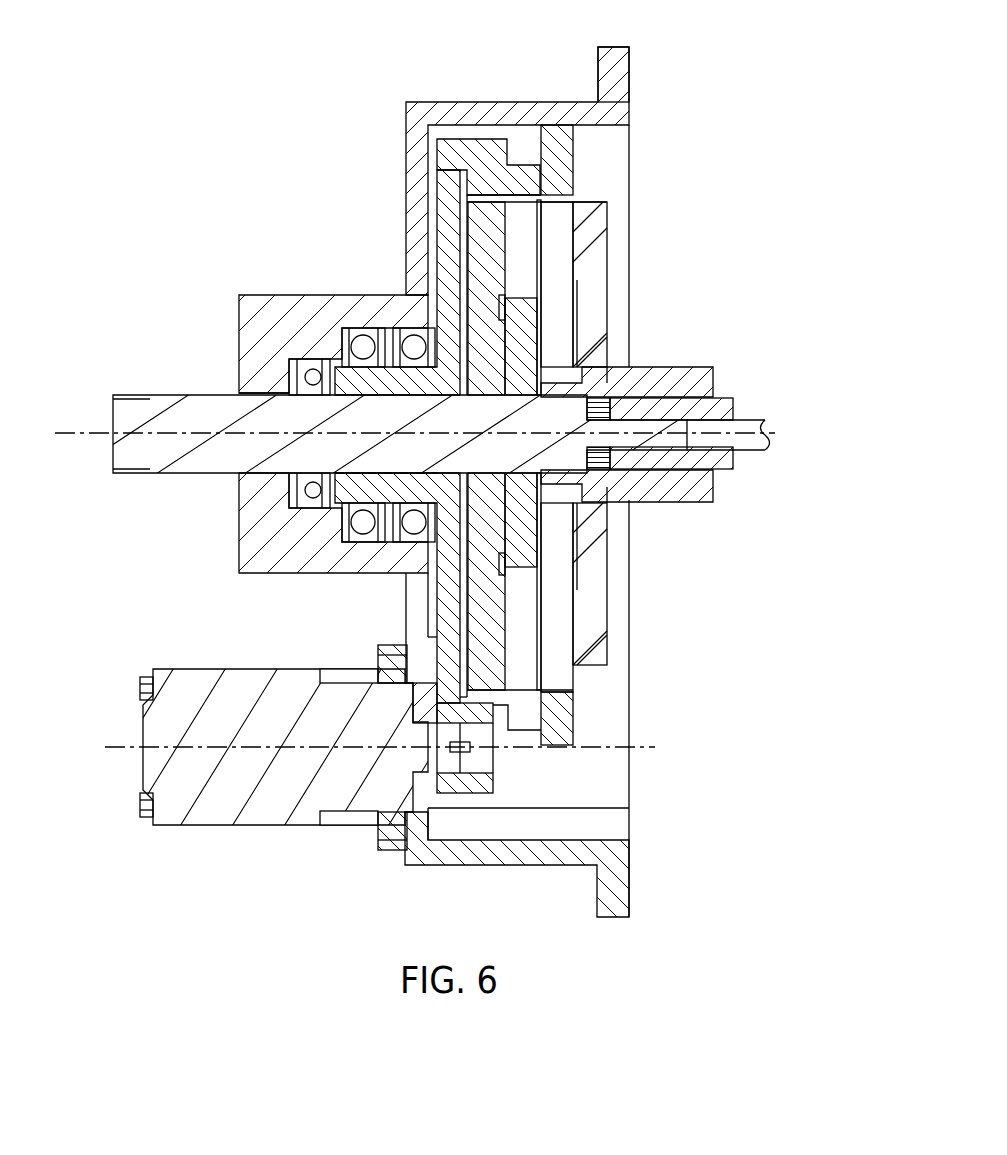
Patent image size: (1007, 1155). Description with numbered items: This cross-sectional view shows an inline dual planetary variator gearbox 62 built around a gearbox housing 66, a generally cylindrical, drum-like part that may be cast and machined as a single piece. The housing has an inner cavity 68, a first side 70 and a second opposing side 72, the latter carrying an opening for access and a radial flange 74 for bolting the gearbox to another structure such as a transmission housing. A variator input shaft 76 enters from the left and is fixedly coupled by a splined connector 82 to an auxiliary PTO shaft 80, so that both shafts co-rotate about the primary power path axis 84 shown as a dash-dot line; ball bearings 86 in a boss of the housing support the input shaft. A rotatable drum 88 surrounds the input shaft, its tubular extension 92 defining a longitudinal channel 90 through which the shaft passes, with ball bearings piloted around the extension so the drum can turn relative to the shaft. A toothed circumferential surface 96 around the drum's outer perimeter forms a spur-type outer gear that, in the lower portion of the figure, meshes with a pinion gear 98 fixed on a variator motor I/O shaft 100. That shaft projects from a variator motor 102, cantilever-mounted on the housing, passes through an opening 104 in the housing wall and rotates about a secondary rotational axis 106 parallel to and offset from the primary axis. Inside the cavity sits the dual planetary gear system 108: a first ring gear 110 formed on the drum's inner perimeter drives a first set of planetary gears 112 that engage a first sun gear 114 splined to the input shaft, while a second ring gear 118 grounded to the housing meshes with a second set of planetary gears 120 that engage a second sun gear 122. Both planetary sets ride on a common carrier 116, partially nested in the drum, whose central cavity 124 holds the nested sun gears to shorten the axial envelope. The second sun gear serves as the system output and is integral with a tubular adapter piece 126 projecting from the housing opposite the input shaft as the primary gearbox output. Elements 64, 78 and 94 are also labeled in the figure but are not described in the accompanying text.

The inline dual planetary variator gearbox 62 is at (236, 70).
The lower housing portion 64 is at (250, 566).
The gearbox housing 66 is at (238, 520).
The inner cavity 68 is at (614, 837).
The first side 70 is at (240, 312).
The second opposing side 72 is at (630, 100).
The radial flange 74 is at (600, 75).
The variator input shaft 76 is at (152, 394).
The shaft journal 78 is at (266, 385).
The auxiliary PTO shaft 80 is at (752, 426).
The splined connector 82 is at (722, 406).
The primary power path axis 84 is at (88, 435).
The ball bearings 86 is at (312, 368).
The rotatable drum 88 is at (445, 245).
The longitudinal channel 90 is at (374, 478).
The tubular extension 92 is at (346, 482).
The bearings 94 is at (412, 334).
The toothed circumferential surface 96 is at (466, 142).
The pinion gear 98 is at (452, 782).
The variator motor I/O shaft 100 is at (488, 758).
The variator motor 102 is at (178, 830).
The opening 104 is at (412, 703).
The secondary rotational axis 106 is at (655, 747).
The dual planetary gear system 108 is at (610, 663).
The first ring gear 110 is at (521, 196).
The first set of planetary gears 112 is at (487, 236).
The first sun gear 114 is at (525, 342).
The common carrier 116 is at (586, 273).
The second ring gear 118 is at (566, 144).
The second set of planetary gears 120 is at (553, 263).
The second sun gear 122 is at (590, 346).
The central cavity 124 is at (592, 322).
The tubular adapter piece 126 is at (676, 378).